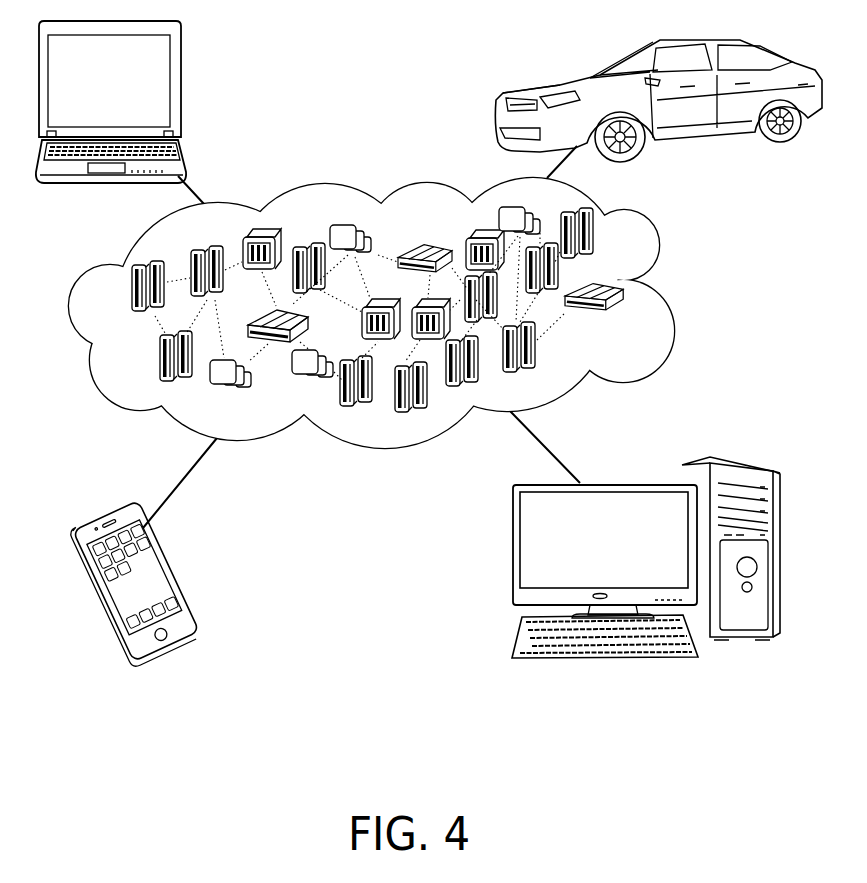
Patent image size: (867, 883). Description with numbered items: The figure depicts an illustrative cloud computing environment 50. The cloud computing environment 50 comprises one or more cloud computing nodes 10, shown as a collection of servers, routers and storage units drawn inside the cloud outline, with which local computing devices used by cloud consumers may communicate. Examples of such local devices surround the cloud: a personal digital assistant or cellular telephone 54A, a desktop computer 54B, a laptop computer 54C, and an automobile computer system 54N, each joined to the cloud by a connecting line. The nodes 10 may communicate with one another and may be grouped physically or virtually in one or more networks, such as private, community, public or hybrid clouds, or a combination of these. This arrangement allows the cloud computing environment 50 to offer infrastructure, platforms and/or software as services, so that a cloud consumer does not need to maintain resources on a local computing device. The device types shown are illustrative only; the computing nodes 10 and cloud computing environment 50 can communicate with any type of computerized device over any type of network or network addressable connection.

The cloud computing node 10 is at (622, 307).
The cloud computing environment 50 is at (670, 299).
The personal digital assistant (PDA) or cellular telephone 54A is at (157, 575).
The desktop computer 54B is at (683, 463).
The laptop computer 54C is at (162, 97).
The automobile computer system 54N is at (500, 106).